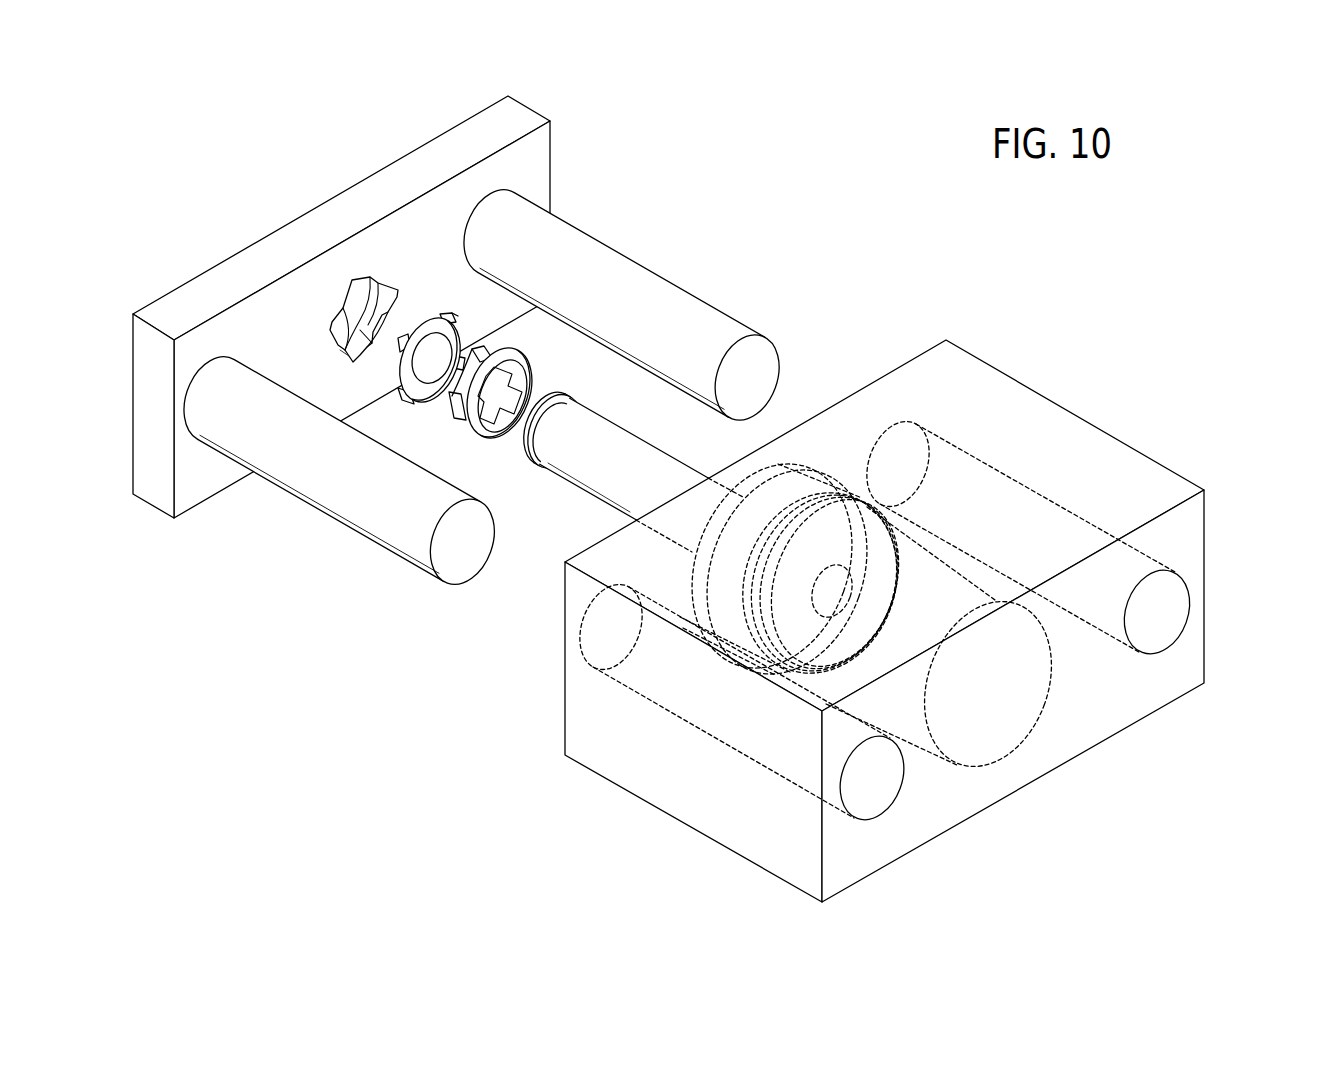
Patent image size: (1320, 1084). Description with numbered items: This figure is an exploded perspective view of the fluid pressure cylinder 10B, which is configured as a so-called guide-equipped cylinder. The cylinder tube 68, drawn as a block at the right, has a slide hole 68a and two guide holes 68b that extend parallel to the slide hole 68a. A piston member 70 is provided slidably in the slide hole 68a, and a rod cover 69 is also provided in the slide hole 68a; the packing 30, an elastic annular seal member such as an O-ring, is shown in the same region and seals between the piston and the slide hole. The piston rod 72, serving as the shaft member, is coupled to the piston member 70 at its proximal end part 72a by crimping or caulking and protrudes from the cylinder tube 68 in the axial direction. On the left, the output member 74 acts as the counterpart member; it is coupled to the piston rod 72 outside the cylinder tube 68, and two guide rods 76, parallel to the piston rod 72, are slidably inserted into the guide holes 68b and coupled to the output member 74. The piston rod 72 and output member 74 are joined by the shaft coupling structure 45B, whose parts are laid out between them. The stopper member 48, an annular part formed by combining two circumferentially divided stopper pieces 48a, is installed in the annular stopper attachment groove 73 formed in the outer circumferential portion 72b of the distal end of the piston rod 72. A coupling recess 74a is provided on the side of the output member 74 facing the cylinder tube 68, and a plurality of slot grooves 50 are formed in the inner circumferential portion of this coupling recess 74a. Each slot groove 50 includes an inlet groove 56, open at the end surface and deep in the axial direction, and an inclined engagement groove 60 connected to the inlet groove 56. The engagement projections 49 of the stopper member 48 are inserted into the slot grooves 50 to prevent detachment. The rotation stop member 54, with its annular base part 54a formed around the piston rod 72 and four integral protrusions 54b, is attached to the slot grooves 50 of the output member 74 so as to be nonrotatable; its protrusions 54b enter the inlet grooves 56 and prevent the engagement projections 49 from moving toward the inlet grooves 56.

The fluid pressure cylinder 10B is at (1057, 211).
The output member 74 is at (205, 266).
The coupling recess 74a is at (347, 356).
The guide rod 76 is at (711, 318).
The slot groove 50 is at (330, 318).
The inlet groove 56 is at (395, 300).
The inclined engagement groove 60 is at (372, 303).
The shaft coupling structure 45B is at (334, 372).
The stopper member 48 is at (430, 350).
The stopper piece 48a is at (463, 328).
The engagement projection 49 is at (412, 397).
The rotation stop member 54 is at (541, 396).
The annular base part 54a is at (457, 406).
The protrusion 54b is at (482, 354).
The piston rod 72 is at (614, 454).
The proximal end part 72a is at (848, 604).
The outer circumferential portion 72b is at (560, 394).
The stopper attachment groove 73 is at (547, 430).
The cylinder tube 68 is at (921, 621).
The slide hole 68a is at (973, 590).
The guide hole 68b is at (1168, 598).
The rod cover 69 is at (798, 490).
The packing 30 is at (823, 497).
The piston member 70 is at (893, 578).